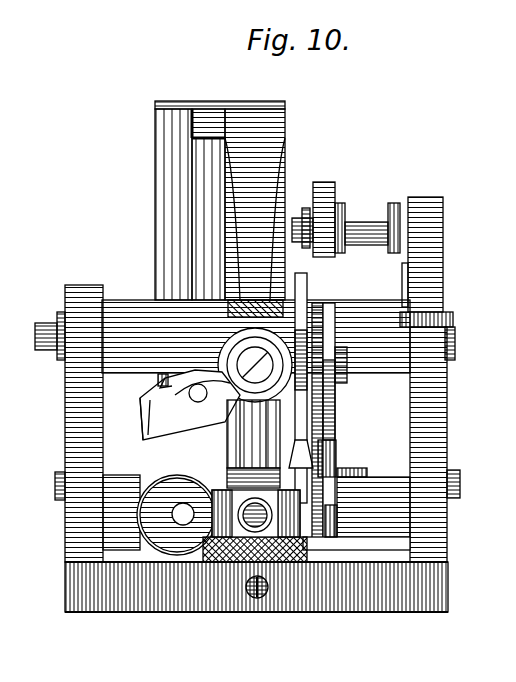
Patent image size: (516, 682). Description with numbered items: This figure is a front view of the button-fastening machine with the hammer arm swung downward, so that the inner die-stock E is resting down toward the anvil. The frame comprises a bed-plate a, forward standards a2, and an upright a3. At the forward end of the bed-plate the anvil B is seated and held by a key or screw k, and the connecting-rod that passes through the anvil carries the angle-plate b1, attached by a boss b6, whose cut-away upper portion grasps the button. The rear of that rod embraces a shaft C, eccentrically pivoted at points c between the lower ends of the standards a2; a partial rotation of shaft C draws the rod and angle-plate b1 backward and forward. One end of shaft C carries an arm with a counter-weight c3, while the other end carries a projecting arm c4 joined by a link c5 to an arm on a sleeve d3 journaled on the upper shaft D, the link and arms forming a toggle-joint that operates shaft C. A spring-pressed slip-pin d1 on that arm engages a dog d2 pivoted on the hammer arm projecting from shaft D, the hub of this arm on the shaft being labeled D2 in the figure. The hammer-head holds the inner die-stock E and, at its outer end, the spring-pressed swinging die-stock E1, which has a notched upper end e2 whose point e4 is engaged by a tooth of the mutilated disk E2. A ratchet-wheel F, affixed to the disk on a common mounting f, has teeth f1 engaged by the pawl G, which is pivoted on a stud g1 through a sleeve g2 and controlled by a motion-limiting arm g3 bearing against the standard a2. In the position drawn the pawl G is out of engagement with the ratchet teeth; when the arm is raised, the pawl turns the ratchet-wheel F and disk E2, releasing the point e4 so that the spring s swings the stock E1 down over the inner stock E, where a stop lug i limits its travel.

The bed-plate a is at (256, 587).
The standard a2 is at (70, 517).
The upright a3 is at (160, 240).
The pivot point c is at (57, 496).
The shaft D is at (256, 336).
The hub D2 is at (300, 168).
The pawl G is at (335, 196).
The stud g1 is at (298, 244).
The sleeve g2 is at (361, 236).
The motion-limiting arm g3 is at (403, 262).
The notched upper end e2 is at (293, 345).
The point of the cut-away portion e4 is at (308, 360).
The inner die-stock E is at (240, 430).
The swinging die-stock E1 is at (142, 428).
The disk E2 is at (337, 449).
The pin i is at (158, 383).
The spring s is at (202, 399).
The common mounting f is at (308, 414).
The ratchet-wheel teeth f1 is at (336, 441).
The ratchet-wheel F is at (336, 410).
The slip-pin d1 is at (301, 462).
The dog d2 is at (210, 480).
The sleeve d3 is at (364, 373).
The counter-weight c3 is at (179, 524).
The projecting arm c4 is at (336, 512).
The link c5 is at (352, 467).
The shaft C is at (356, 503).
The anvil B is at (238, 535).
The angle-plate b1 is at (236, 497).
The boss b6 is at (253, 528).
The key or screw k is at (255, 596).